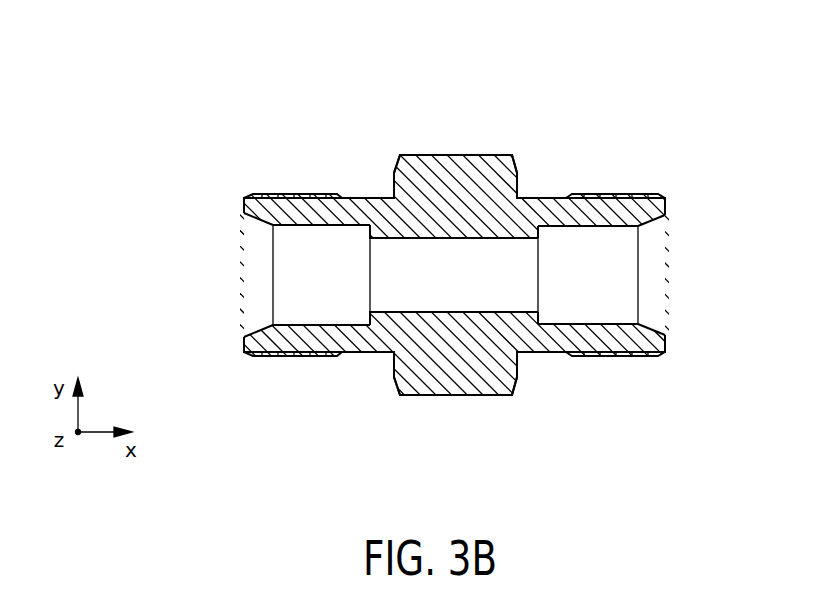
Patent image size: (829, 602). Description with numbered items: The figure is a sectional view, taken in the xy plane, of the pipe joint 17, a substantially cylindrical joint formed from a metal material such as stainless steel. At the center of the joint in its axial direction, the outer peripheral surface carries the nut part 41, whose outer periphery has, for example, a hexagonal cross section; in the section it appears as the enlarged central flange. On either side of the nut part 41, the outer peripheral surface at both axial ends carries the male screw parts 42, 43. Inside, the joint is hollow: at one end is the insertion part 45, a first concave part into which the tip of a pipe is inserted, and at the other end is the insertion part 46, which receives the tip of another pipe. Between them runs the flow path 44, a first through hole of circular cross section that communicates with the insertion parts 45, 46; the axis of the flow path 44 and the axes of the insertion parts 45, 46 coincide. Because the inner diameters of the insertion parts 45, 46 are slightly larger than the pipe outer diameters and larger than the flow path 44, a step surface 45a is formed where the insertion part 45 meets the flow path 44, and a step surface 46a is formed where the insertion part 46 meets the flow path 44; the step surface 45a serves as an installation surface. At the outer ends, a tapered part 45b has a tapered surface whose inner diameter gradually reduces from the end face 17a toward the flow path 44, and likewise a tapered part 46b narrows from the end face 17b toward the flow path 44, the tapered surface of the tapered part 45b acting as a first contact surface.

The pipe joint 17 is at (270, 152).
The end face 17a is at (246, 336).
The end face 17b is at (653, 330).
The nut part 41 is at (452, 397).
The male screw part 42 is at (297, 353).
The male screw part 43 is at (622, 197).
The flow path 44 is at (518, 253).
The insertion part 45 is at (283, 251).
The step surface 45a is at (371, 241).
The tapered part 45b is at (258, 220).
The insertion part 46 is at (625, 243).
The step surface 46a is at (540, 302).
The tapered part 46b is at (647, 326).